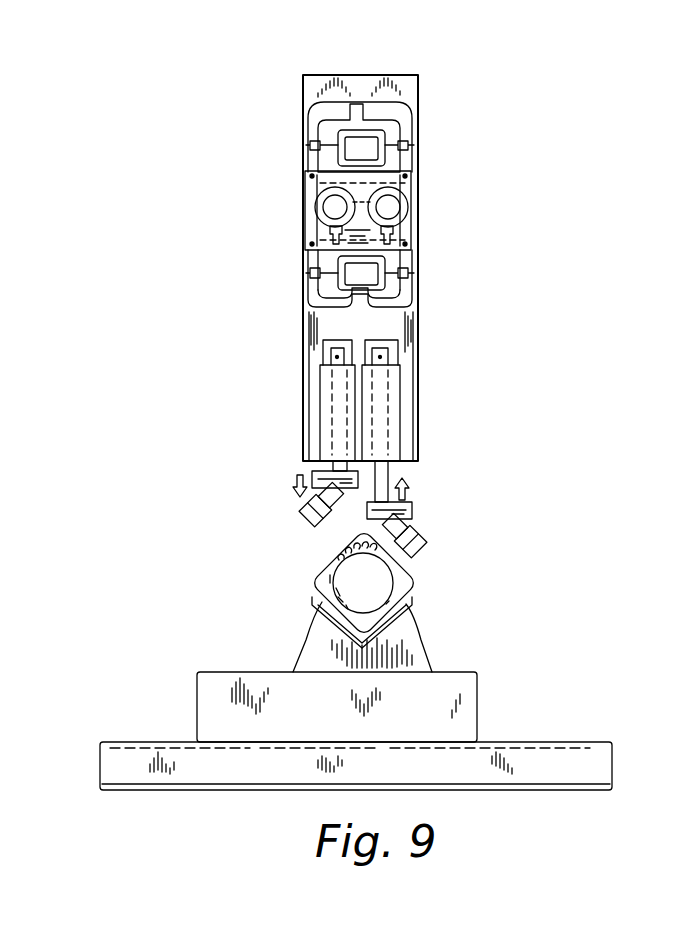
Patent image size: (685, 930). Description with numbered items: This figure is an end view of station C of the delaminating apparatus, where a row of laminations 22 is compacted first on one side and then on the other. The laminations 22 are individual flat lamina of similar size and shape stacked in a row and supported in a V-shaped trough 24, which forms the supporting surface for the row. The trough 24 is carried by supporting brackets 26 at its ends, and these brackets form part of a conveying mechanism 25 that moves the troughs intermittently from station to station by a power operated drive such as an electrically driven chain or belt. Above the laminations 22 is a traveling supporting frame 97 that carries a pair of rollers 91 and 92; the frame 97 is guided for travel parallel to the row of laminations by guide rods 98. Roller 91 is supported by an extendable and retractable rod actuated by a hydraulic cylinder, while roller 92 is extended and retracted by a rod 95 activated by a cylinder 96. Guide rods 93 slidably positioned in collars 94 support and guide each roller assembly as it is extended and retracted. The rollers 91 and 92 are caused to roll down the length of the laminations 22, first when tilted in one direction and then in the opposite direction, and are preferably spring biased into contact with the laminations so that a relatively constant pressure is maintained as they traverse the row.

The station C is at (468, 136).
The guide rods 98 is at (387, 210).
The traveling supporting frame 97 is at (413, 261).
The cylinder 96 is at (332, 385).
The collars 94 is at (385, 388).
The rod 95 is at (332, 468).
The guide rods 93 is at (381, 474).
The roller 92 is at (314, 512).
The roller 91 is at (410, 528).
The laminations 22 is at (404, 582).
The V-shaped troughs 24 is at (405, 612).
The supporting brackets 26 is at (393, 657).
The conveying mechanism 25 is at (492, 706).